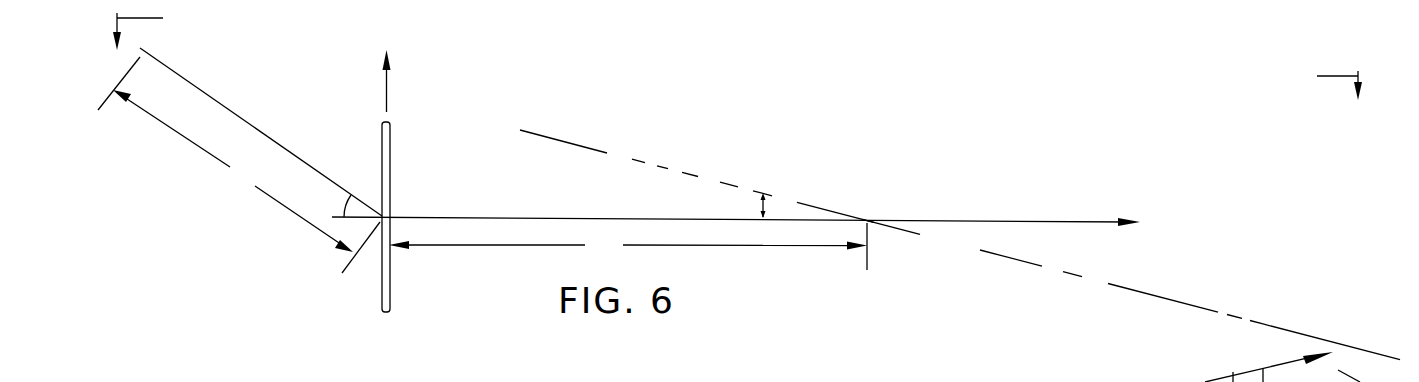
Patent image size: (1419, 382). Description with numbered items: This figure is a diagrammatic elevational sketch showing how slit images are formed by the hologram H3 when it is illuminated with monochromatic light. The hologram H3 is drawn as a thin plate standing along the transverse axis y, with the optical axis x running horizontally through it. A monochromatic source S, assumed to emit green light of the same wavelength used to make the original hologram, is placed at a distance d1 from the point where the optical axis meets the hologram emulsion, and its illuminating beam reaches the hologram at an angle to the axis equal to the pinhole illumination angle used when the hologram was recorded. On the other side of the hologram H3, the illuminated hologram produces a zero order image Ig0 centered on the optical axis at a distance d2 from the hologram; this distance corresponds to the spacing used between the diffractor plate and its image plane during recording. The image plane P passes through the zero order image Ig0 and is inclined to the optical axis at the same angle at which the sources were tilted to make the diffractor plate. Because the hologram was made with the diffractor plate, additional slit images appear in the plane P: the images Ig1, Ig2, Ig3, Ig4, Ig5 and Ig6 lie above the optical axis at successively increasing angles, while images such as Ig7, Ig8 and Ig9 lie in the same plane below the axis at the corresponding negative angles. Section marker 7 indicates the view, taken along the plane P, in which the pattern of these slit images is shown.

The section line 7- 7 is at (737, 67).
The monochromatic source S is at (261, 124).
The source distance d1 is at (239, 165).
The image distance d2 is at (628, 246).
The optical axis x is at (745, 223).
The transverse axis y is at (377, 81).
The hologram H3 is at (403, 220).
The image plane P is at (557, 140).
The zero order image Ig0 is at (870, 219).
The first slit image Ig1 is at (637, 162).
The second slit image Ig2 is at (663, 166).
The third slit image Ig3 is at (690, 176).
The fourth slit image Ig4 is at (728, 182).
The fifth slit image Ig5 is at (760, 193).
The sixth slit image Ig6 is at (810, 203).
The seventh slit image Ig7 is at (940, 241).
The eighth slit image Ig8 is at (1068, 272).
The ninth slit image Ig9 is at (1262, 320).